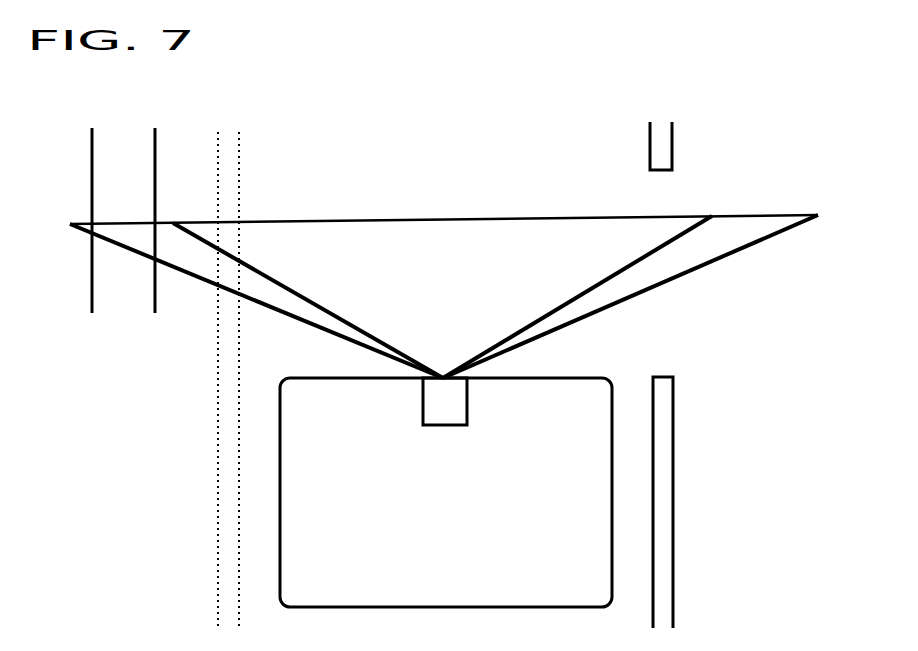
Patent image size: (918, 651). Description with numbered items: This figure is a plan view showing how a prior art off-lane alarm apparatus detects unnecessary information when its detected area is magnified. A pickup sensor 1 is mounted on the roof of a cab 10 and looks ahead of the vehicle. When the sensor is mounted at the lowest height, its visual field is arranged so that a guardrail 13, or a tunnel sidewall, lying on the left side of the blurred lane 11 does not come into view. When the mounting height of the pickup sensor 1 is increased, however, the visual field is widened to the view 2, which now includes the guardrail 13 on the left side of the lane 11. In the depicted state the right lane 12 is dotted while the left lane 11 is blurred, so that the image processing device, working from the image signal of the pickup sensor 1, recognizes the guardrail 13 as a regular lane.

The pickup sensor 1 is at (467, 402).
The view 2 is at (643, 293).
The cab 10 is at (445, 607).
The blurred lane 11 is at (227, 513).
The right lane 12 is at (662, 537).
The guardrail 13 is at (133, 297).